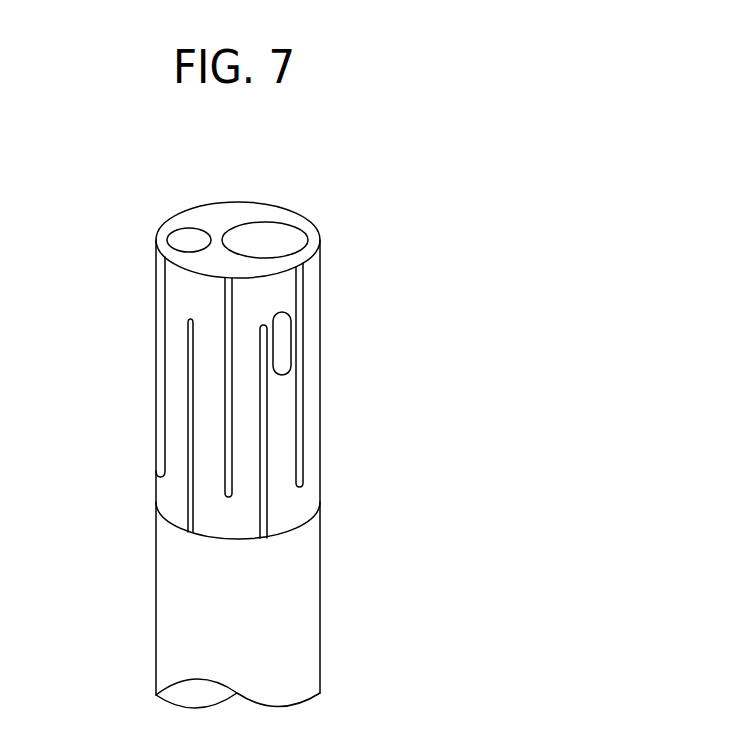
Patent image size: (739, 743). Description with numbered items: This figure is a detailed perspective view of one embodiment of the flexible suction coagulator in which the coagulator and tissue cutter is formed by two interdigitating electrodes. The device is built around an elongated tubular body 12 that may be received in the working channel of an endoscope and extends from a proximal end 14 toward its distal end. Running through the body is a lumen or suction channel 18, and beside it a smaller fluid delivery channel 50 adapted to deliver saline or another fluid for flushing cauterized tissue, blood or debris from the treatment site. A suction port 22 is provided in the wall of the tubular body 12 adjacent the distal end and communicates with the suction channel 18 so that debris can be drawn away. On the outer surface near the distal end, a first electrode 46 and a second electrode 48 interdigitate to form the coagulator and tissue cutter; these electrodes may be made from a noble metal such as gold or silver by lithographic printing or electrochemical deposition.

The elongated tubular body 12 is at (288, 628).
The proximal end 14 is at (156, 547).
The suction channel 18 is at (275, 240).
The suction port 22 is at (283, 339).
The first electrode 46 is at (232, 432).
The second electrode 48 is at (262, 517).
The fluid delivery channel 50 is at (187, 240).